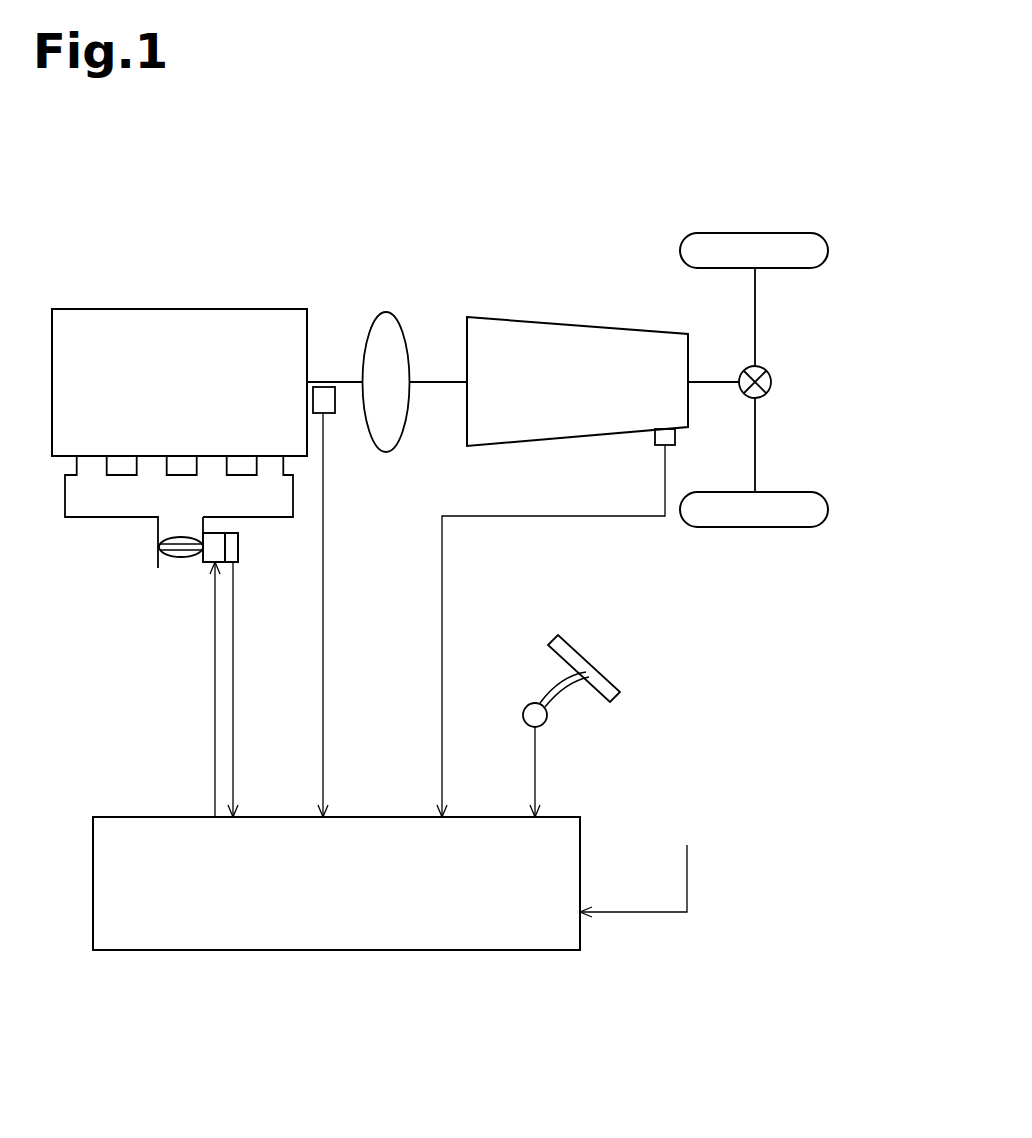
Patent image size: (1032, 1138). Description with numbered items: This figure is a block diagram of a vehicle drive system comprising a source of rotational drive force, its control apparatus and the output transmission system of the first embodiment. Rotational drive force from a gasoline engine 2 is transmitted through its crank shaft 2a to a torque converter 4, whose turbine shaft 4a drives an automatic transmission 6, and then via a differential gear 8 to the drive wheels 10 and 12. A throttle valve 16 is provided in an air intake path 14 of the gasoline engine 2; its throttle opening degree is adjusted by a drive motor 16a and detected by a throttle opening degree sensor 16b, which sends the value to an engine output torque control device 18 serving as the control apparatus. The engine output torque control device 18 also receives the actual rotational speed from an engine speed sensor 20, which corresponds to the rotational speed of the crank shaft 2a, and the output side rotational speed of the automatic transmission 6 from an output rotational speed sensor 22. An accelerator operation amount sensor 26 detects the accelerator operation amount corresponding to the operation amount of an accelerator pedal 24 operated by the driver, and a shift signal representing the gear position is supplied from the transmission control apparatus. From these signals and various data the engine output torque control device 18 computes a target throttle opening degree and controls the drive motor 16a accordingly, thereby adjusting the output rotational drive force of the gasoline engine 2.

The gasoline engine 2 is at (279, 309).
The crank shaft 2a is at (348, 381).
The torque converter 4 is at (400, 318).
The turbine shaft 4a is at (450, 381).
The automatic transmission 6 is at (570, 325).
The differential gear 8 is at (771, 380).
The drive wheel 10 is at (829, 243).
The drive wheel 12 is at (829, 502).
The air intake path 14 is at (155, 533).
The throttle valve 16 is at (178, 556).
The drive motor 16a is at (206, 564).
The throttle opening degree sensor 16b is at (240, 545).
The engine output torque control device 18 is at (120, 816).
The engine speed sensor 20 is at (327, 403).
The output rotational speed sensor 22 is at (650, 437).
The accelerator pedal 24 is at (573, 645).
The accelerator operation amount sensor 26 is at (524, 704).